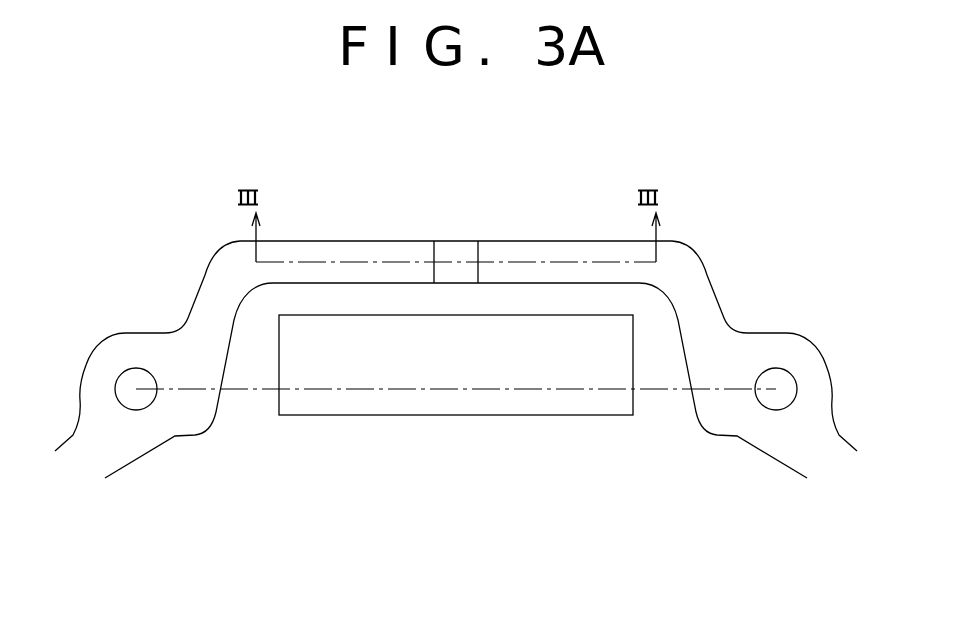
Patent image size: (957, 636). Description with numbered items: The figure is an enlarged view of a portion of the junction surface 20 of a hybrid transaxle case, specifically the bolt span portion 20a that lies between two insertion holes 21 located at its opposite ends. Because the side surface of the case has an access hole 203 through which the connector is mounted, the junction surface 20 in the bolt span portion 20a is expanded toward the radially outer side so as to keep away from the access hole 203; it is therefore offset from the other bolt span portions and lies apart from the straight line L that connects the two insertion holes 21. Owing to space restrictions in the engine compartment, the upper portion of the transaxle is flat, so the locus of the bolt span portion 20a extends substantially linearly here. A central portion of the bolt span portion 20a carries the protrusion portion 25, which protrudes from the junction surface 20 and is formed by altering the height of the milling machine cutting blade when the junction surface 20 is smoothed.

The junction surface 20 is at (705, 285).
The bolt span portion 20a is at (356, 218).
The insertion hole 21 is at (137, 410).
The protrusion portion 25 is at (462, 247).
The access hole 203 is at (447, 413).
The straight line L is at (330, 383).